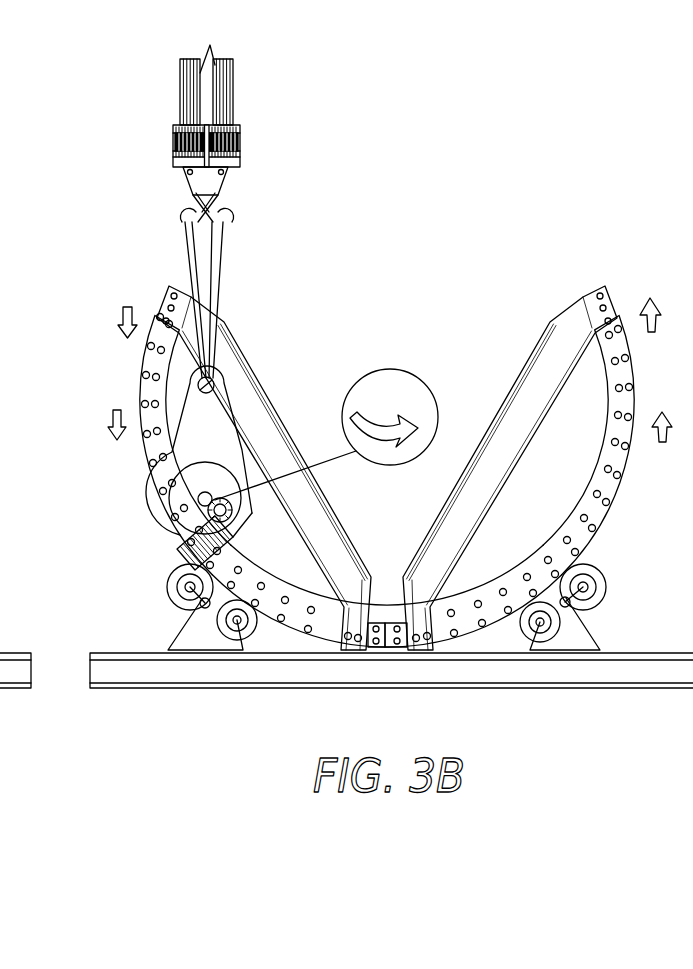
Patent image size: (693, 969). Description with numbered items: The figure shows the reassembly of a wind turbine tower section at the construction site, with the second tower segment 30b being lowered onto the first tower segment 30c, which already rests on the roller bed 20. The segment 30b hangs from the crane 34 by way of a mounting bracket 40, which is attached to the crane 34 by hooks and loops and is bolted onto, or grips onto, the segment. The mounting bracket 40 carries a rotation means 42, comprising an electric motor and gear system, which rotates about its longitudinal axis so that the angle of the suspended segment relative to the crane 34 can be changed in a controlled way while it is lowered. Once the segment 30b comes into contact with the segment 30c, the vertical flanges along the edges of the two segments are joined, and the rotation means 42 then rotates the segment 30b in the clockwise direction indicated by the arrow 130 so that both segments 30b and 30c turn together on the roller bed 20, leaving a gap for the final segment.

The roller bed 20 is at (176, 676).
The tower segment 30b is at (307, 630).
The tower segment 30c is at (600, 513).
The crane 34 is at (195, 186).
The mounting bracket 40 is at (192, 403).
The rotation means 42 is at (183, 507).
The arrow 130 is at (386, 368).